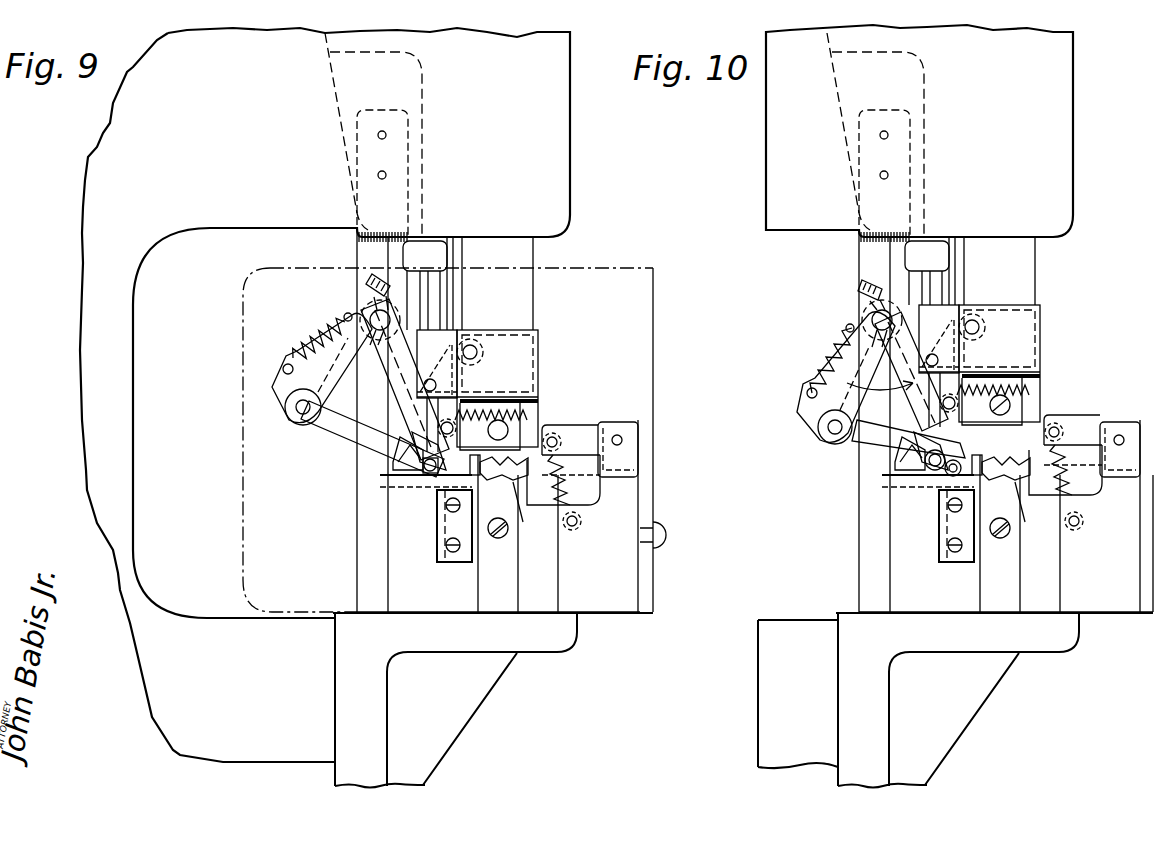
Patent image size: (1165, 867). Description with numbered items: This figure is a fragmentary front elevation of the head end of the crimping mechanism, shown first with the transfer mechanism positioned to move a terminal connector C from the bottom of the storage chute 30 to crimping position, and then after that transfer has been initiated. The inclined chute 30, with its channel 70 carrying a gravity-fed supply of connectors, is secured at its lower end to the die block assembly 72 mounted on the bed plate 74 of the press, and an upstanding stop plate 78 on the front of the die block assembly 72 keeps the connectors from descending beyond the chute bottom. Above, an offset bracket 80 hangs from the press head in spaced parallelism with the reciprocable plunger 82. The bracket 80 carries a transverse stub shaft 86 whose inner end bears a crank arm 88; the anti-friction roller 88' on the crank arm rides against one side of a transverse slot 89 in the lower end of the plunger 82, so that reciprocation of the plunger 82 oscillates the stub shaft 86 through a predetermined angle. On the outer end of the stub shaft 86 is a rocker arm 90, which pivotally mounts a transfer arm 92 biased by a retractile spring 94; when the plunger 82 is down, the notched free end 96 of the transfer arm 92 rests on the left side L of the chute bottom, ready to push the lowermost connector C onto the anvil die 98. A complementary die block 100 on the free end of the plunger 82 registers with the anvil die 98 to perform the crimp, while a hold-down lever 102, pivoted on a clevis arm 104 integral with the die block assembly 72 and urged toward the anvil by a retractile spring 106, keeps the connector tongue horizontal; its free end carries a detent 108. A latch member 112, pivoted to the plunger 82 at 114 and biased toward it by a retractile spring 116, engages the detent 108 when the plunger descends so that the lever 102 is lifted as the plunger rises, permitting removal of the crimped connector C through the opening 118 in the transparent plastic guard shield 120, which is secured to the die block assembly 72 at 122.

In FIG. 9, the storage chute 30 is at (402, 384).
In FIG. 9, the channel 70 is at (435, 445).
In FIG. 10, the channel 70 is at (900, 480).
In FIG. 9, the die block assembly 72 is at (610, 594).
In FIG. 10, the die block assembly 72 is at (1006, 516).
In FIG. 9, the bed plate 74 is at (445, 699).
In FIG. 10, the bed plate 74 is at (947, 699).
In FIG. 9, the stop plate 78 is at (437, 540).
In FIG. 10, the stop plate 78 is at (916, 533).
In FIG. 9, the offset bracket 80 is at (365, 256).
In FIG. 10, the offset bracket 80 is at (874, 361).
In FIG. 9, the reciprocable plunger 82 is at (535, 256).
In FIG. 10, the reciprocable plunger 82 is at (1013, 271).
In FIG. 9, the stub shaft 86 is at (368, 300).
In FIG. 9, the crank arm 88 is at (453, 344).
In FIG. 10, the crank arm 88 is at (960, 323).
In FIG. 9, the anti-friction roller 88' is at (485, 337).
In FIG. 10, the anti-friction roller 88' is at (994, 312).
In FIG. 9, the transverse slot 89 is at (538, 345).
In FIG. 10, the transverse slot 89 is at (1000, 363).
In FIG. 9, the rocker arm 90 is at (290, 387).
In FIG. 10, the rocker arm 90 is at (860, 347).
In FIG. 9, the transfer arm 92 is at (350, 418).
In FIG. 10, the transfer arm 92 is at (856, 438).
In FIG. 9, the retractile spring 94 is at (318, 336).
In FIG. 10, the retractile spring 94 is at (808, 354).
In FIG. 9, the notched free end 96 is at (415, 462).
In FIG. 10, the notched free end 96 is at (887, 464).
In FIG. 9, the anvil die 98 is at (521, 528).
In FIG. 10, the anvil die 98 is at (1022, 516).
In FIG. 9, the complementary die block 100 is at (546, 428).
In FIG. 10, the complementary die block 100 is at (1077, 428).
In FIG. 9, the hold-down lever 102 is at (582, 426).
In FIG. 10, the hold-down lever 102 is at (1117, 438).
In FIG. 9, the clevis arm 104 is at (638, 492).
In FIG. 10, the clevis arm 104 is at (1086, 482).
In FIG. 9, the retractile spring 106 is at (580, 470).
In FIG. 10, the retractile spring 106 is at (1090, 492).
In FIG. 9, the detent 108 is at (470, 462).
In FIG. 10, the detent 108 is at (1002, 486).
In FIG. 9, the latch member 112 is at (482, 402).
In FIG. 10, the latch member 112 is at (987, 388).
In FIG. 9, the pivot 114 is at (440, 385).
In FIG. 10, the pivot 114 is at (979, 352).
In FIG. 10, the retractile spring 116 is at (1021, 378).
In FIG. 9, the opening 118 is at (560, 508).
In FIG. 9, the guard shield 120 is at (244, 542).
In FIG. 9, the securing point 122 is at (668, 535).
In FIG. 9, the left side L is at (440, 473).
In FIG. 10, the terminal connector C is at (905, 489).